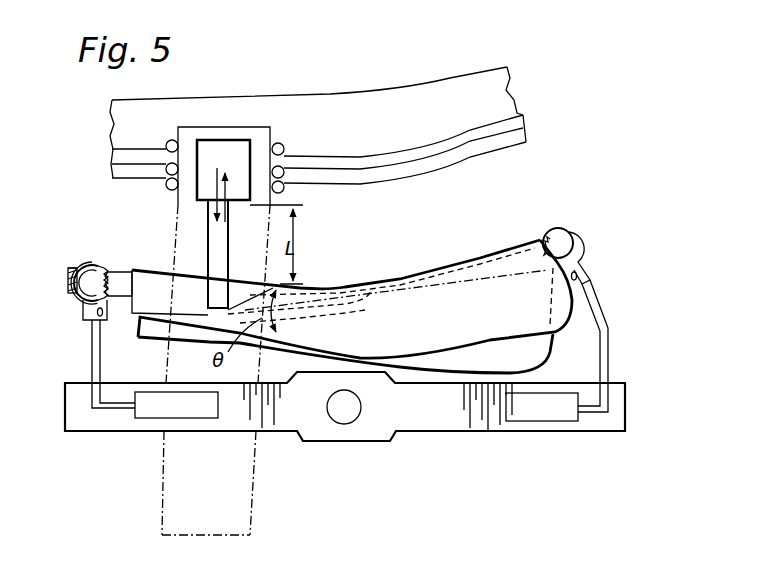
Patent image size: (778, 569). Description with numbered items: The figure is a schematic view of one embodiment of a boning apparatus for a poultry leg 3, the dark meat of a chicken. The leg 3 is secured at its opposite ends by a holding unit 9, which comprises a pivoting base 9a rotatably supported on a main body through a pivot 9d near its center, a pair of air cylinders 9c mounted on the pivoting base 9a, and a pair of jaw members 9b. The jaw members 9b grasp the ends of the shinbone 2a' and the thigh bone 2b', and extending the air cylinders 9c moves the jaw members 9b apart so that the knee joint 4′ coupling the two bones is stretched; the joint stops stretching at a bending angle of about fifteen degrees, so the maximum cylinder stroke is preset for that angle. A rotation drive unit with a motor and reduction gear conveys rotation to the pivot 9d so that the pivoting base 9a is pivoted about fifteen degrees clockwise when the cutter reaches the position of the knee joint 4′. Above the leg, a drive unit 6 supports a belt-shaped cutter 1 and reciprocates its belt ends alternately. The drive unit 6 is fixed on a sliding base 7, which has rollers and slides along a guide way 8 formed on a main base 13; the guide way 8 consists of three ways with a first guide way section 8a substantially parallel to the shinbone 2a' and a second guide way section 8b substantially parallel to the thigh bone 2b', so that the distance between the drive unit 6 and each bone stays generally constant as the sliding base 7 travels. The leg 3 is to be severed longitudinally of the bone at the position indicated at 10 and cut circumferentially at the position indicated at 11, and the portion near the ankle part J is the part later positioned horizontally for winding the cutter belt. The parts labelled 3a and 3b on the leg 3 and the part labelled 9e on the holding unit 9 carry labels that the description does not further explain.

The belt-shaped cutter 1 is at (208, 230).
The shinbone 2a' is at (91, 309).
The thigh bone 2b' is at (559, 219).
The poultry leg 3 is at (465, 254).
The upper layer of cushion 3a is at (497, 307).
The lower layer of cushion 3b is at (510, 353).
The knee joint 4′ is at (360, 305).
The drive unit 6 is at (197, 185).
The sliding base 7 is at (178, 130).
The guide way 8 is at (496, 151).
The first guide way section 8a is at (317, 163).
The second guide way section 8b is at (475, 137).
The holding unit 9 is at (296, 434).
The pivoting base 9a is at (347, 442).
The jaw members 9b is at (80, 307).
The air cylinders 9c is at (202, 419).
The pivot 9d is at (361, 408).
The support arm 9e is at (92, 360).
The longitudinal cut 10 is at (165, 273).
The circumferential cut 11 is at (130, 265).
The main base 13 is at (398, 118).
The ankle part J is at (68, 278).